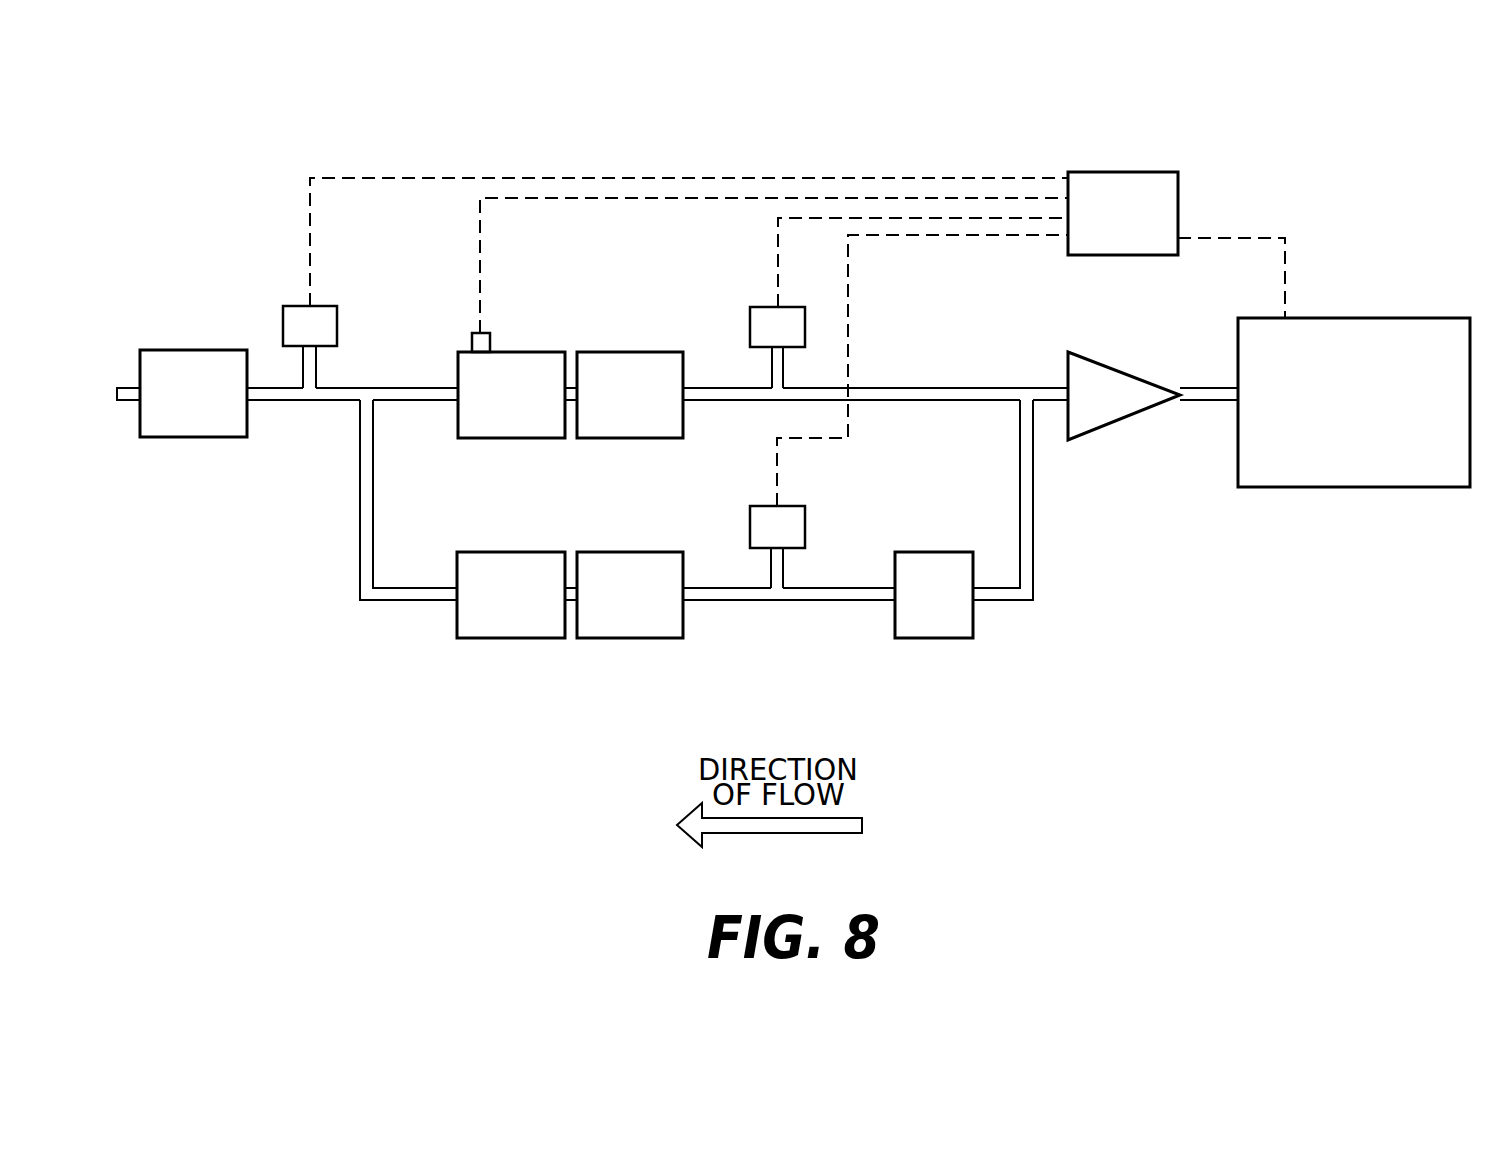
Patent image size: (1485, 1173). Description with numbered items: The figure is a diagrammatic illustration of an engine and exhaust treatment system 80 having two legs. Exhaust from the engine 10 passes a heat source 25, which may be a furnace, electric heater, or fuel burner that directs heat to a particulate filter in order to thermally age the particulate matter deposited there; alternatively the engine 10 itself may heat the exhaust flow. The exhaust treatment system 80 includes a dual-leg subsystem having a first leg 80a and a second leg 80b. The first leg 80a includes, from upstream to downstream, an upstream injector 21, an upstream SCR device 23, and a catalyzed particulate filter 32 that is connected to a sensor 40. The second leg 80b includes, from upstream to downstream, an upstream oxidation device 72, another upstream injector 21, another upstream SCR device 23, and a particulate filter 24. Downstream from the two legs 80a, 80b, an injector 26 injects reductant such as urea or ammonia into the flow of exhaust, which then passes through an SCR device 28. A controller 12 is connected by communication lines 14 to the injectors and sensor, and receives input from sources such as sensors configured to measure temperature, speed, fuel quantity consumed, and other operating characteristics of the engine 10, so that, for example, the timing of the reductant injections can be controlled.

The engine 10 is at (1355, 318).
The controller 12 is at (1140, 172).
The communication lines 14 is at (308, 198).
The upstream injector 21 is at (790, 307).
The upstream SCR device 23 is at (612, 352).
The particulate filter 24 is at (497, 552).
The heat source 25 is at (1120, 368).
The injector 26 is at (320, 306).
The SCR device 28 is at (180, 350).
The catalyzed particulate filter 32 is at (527, 352).
The sensor 40 is at (472, 338).
The upstream oxidation device 72 is at (945, 552).
The exhaust treatment system 80 is at (350, 133).
The first leg 80a is at (427, 251).
The second leg 80b is at (672, 708).